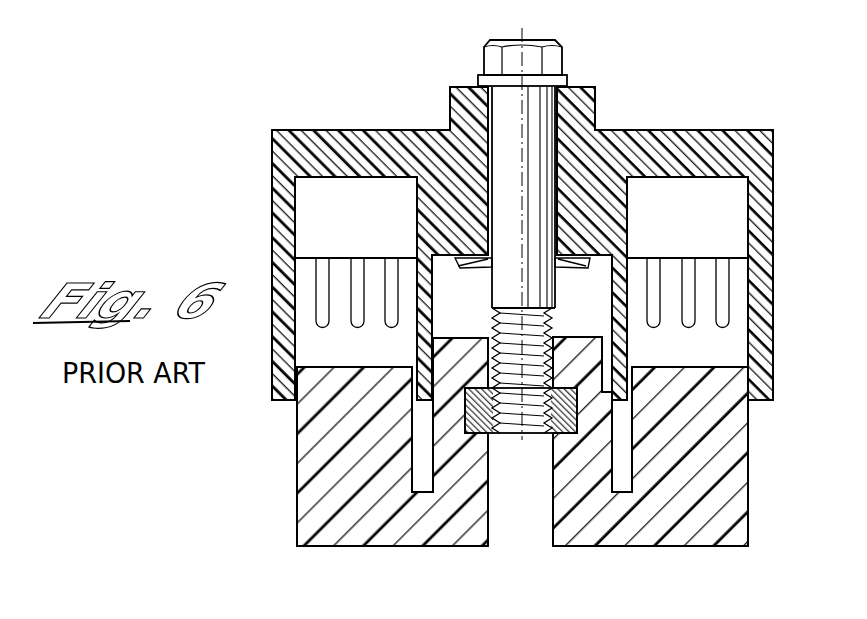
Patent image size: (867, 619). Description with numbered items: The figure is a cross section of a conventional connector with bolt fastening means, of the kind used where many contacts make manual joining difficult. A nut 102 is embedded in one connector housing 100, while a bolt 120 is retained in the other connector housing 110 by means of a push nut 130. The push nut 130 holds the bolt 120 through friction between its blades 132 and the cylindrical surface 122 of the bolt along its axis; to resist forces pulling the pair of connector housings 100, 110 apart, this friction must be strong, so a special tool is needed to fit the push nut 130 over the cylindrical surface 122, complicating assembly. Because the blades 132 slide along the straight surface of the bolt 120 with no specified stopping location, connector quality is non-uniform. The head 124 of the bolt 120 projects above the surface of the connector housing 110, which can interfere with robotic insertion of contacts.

The connector housing 100 is at (328, 508).
The nut 102 is at (577, 433).
The connector housing 110 is at (272, 152).
The bolt 120 is at (542, 115).
The cylindrical surface 122 is at (542, 213).
The head 124 is at (557, 60).
The push nut 130 is at (470, 255).
The blades 132 is at (553, 268).